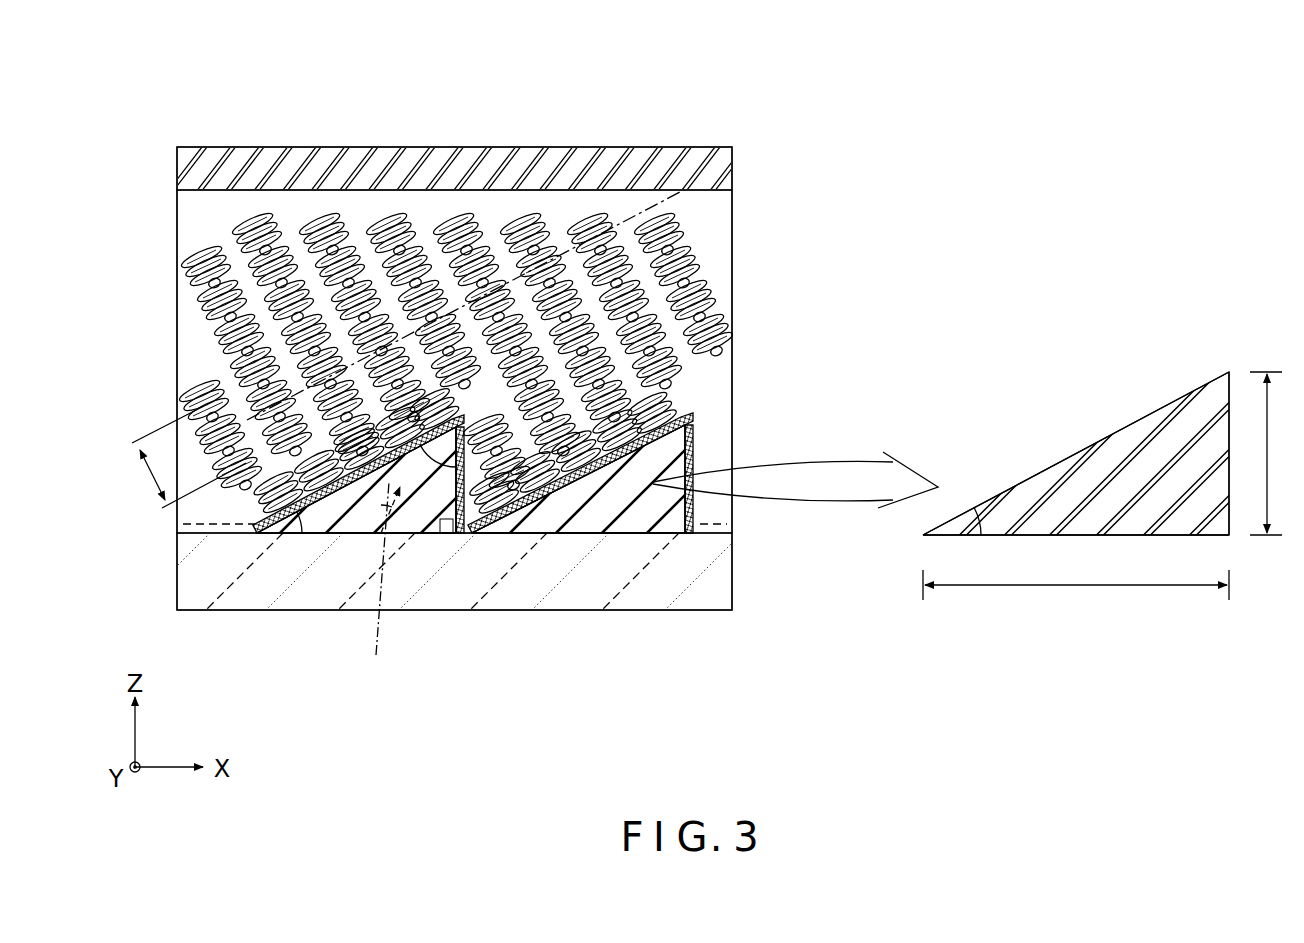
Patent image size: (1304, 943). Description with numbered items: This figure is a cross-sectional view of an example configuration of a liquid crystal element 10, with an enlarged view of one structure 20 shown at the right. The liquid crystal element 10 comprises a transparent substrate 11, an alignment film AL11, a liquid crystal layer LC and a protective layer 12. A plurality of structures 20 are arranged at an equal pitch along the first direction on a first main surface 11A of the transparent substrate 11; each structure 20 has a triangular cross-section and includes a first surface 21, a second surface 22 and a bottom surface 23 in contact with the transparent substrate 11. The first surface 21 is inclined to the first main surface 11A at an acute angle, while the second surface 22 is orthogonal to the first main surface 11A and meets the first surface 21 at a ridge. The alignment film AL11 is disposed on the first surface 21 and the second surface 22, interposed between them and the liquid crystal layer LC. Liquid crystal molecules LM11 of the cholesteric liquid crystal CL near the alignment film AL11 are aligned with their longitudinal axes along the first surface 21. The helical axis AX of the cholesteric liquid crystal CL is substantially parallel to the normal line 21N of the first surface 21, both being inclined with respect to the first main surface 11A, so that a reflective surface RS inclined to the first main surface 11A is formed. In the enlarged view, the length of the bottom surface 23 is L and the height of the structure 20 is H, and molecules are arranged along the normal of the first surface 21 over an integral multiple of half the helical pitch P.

The liquid crystal element 10 is at (270, 88).
The transparent substrate 11 is at (192, 565).
The first main surface 11A is at (212, 520).
The protective layer 12 is at (182, 165).
The structure 20 is at (330, 515).
The first surface 21 is at (287, 505).
The normal line 21N is at (372, 585).
The second surface 22 is at (466, 478).
The bottom surface 23 is at (440, 545).
The alignment film AL11 is at (325, 476).
The liquid crystal layer LC is at (192, 325).
The liquid crystal molecule LM11 is at (341, 460).
The helical axis AX is at (273, 240).
The cholesteric liquid crystal CL is at (285, 245).
The reflective surface RS is at (622, 222).
The helical pitch P is at (188, 457).
The height H is at (1269, 453).
The length L is at (1076, 596).